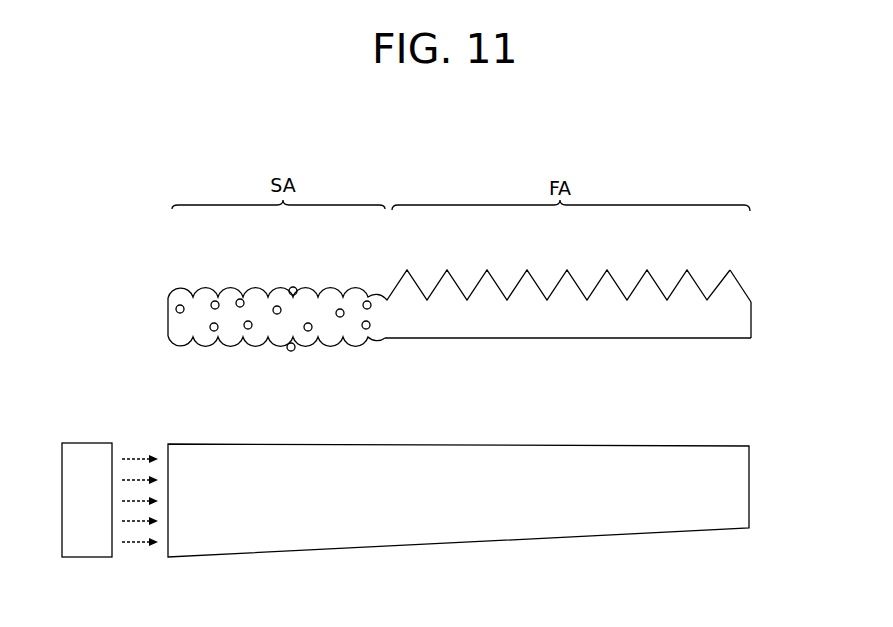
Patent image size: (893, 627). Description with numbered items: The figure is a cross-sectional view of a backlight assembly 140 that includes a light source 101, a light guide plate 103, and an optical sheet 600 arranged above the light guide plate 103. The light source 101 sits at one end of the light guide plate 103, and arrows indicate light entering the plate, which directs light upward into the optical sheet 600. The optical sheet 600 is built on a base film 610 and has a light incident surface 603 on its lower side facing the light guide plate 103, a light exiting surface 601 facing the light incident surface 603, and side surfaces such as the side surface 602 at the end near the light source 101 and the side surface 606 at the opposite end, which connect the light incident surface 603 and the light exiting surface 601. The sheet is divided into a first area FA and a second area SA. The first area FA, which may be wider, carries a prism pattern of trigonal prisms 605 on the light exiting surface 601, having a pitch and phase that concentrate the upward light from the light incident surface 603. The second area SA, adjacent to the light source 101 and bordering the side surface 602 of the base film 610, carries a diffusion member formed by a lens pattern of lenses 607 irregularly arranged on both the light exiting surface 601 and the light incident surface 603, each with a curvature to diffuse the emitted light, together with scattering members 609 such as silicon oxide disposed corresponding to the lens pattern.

The backlight assembly 140 is at (362, 158).
The optical sheet 600 is at (707, 328).
The light exiting surface 601 is at (745, 282).
The side surface 606 is at (751, 315).
The light incident surface 603 is at (622, 340).
The prisms 605 is at (666, 283).
The base film 610 is at (138, 285).
The lenses 607 is at (218, 288).
The scattering members 609 is at (292, 346).
The side surface 602 is at (164, 300).
The light guide plate 103 is at (750, 487).
The light source 101 is at (86, 556).